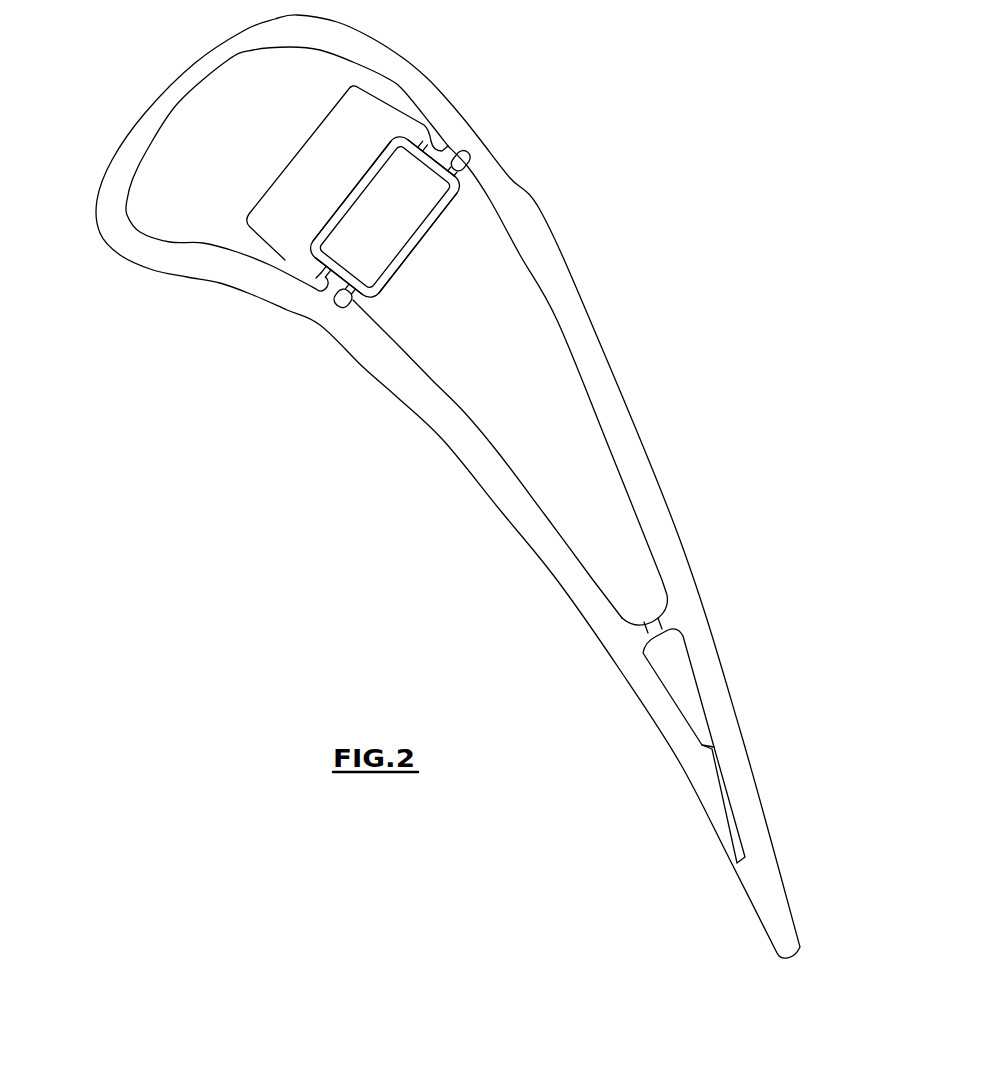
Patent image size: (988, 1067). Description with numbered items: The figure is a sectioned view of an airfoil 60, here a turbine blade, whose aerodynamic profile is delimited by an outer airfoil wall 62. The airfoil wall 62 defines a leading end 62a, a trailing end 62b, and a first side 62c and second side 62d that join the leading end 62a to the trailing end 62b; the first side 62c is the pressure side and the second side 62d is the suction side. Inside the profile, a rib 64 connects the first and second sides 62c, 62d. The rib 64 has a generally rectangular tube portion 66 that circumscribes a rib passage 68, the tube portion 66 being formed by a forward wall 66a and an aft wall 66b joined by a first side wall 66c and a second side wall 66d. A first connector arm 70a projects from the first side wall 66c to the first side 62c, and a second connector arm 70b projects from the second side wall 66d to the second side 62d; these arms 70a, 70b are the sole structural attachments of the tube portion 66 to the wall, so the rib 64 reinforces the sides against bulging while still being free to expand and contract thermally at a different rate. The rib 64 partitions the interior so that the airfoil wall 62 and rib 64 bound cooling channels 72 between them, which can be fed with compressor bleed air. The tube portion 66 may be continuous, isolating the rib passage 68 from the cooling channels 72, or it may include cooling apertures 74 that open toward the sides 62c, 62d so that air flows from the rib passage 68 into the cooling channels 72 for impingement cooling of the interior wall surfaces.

The airfoil 60 is at (466, 521).
The airfoil wall 62 is at (203, 280).
The leading end 62a is at (97, 227).
The trailing end 62b is at (798, 955).
The first side 62c is at (453, 452).
The second side 62d is at (537, 208).
The rib 64 is at (293, 152).
The tube portion 66 is at (437, 233).
The forward wall 66a is at (348, 181).
The aft wall 66b is at (417, 265).
The first side wall 66c is at (360, 288).
The second side wall 66d is at (445, 116).
The rib passage 68 is at (394, 222).
The first connector arm 70a is at (347, 305).
The second connector arm 70b is at (475, 165).
The cooling channels 72 is at (405, 107).
The cooling apertures 74 is at (352, 278).